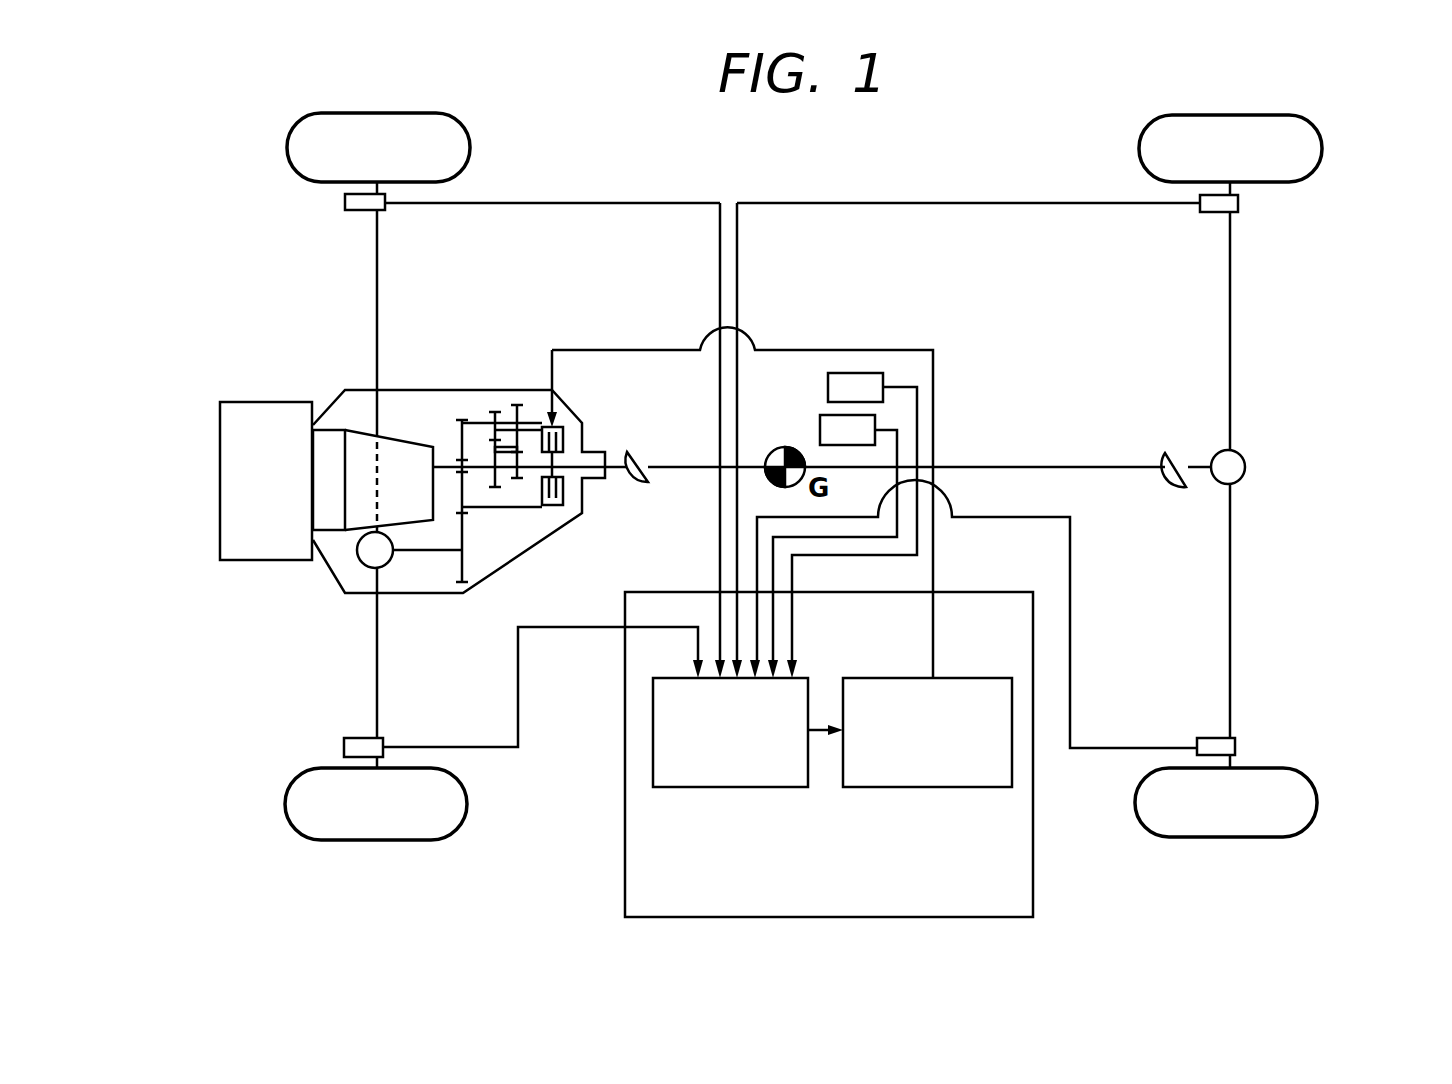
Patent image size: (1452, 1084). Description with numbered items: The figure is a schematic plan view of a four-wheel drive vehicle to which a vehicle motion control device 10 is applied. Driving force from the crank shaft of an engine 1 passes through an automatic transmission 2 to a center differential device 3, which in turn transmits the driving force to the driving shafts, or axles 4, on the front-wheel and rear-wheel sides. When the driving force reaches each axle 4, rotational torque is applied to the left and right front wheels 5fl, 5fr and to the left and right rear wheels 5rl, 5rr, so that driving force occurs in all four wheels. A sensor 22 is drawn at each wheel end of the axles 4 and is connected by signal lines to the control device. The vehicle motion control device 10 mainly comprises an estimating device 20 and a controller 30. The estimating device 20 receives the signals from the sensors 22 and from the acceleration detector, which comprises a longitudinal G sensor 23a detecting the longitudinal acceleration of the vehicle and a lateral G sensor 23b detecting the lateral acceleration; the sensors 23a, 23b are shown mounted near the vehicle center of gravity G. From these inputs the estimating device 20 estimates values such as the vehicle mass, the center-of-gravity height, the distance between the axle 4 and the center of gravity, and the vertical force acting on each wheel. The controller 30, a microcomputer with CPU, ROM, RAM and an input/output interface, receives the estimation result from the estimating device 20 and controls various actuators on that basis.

The engine 1 is at (220, 469).
The automatic transmission 2 is at (358, 440).
The center differential device 3 is at (503, 378).
The driving shaft (axle) 4 is at (377, 283).
The right front wheel 5fr is at (287, 147).
The left front wheel 5fl is at (285, 808).
The right rear wheel 5rr is at (1322, 148).
The left rear wheel 5rl is at (1317, 800).
The vehicle motion control device 10 is at (625, 880).
The estimating device 20 is at (808, 678).
The wheel speed sensor 22 is at (345, 202).
The longitudinal G sensor 23a is at (820, 428).
The lateral G sensor 23b is at (852, 373).
The controller 30 is at (975, 678).